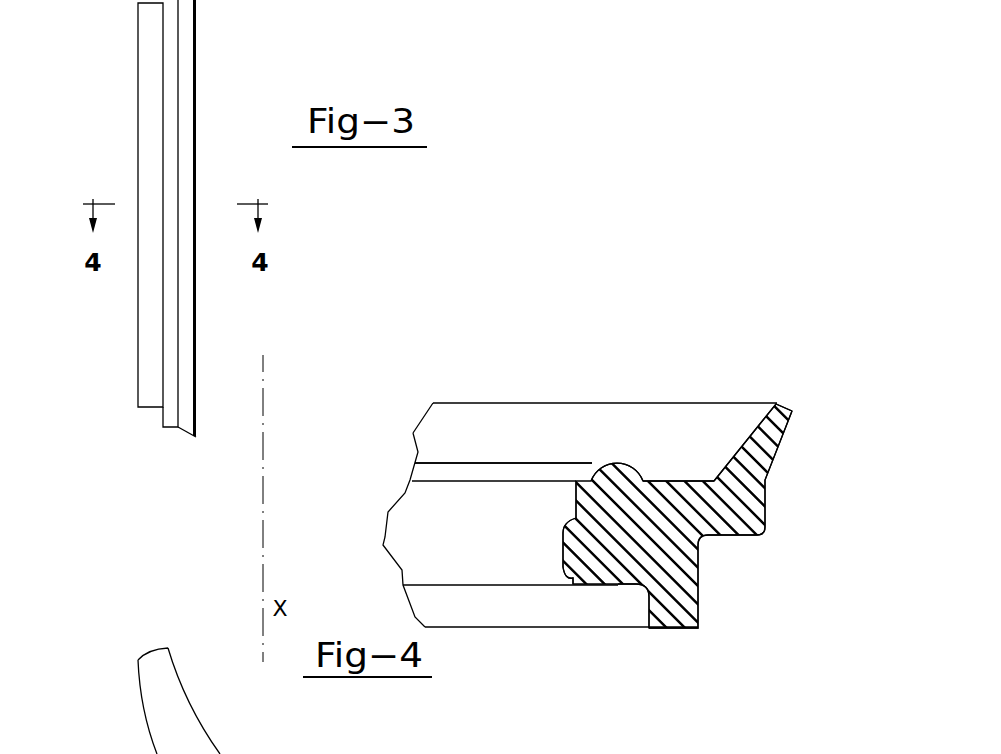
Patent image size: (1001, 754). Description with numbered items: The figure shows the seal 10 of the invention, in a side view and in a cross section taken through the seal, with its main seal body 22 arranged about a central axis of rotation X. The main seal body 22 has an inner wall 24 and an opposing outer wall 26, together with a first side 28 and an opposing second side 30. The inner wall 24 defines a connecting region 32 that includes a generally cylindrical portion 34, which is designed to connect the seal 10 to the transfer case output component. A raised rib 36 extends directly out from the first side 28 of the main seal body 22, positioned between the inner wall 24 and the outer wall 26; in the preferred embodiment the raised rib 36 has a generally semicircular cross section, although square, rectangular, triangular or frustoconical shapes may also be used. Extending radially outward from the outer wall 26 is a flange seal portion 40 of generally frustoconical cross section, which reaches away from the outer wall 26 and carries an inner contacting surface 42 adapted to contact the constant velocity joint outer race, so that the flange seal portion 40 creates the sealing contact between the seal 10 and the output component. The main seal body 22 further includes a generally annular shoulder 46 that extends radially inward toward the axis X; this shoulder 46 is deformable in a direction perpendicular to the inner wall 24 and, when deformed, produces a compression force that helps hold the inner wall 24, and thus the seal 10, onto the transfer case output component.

In FIG. 3, the seal 10 is at (145, 125).
In FIG. 4, the seal 10 is at (544, 430).
In FIG. 3, the main seal body 22 is at (168, 343).
In FIG. 4, the main seal body 22 is at (672, 488).
In FIG. 4, the inner wall 24 is at (576, 502).
In FIG. 3, the outer wall 26 is at (168, 427).
In FIG. 4, the outer wall 26 is at (700, 577).
In FIG. 4, the first side 28 is at (660, 481).
In FIG. 4, the second side 30 is at (618, 584).
In FIG. 4, the connecting region 32 is at (528, 568).
In FIG. 4, the generally cylindrical portion 34 is at (448, 503).
In FIG. 4, the raised rib 36 is at (610, 463).
In FIG. 4, the flange seal portion 40 is at (763, 448).
In FIG. 4, the inner contacting surface 42 is at (715, 480).
In FIG. 4, the generally annular shoulder 46 is at (563, 550).